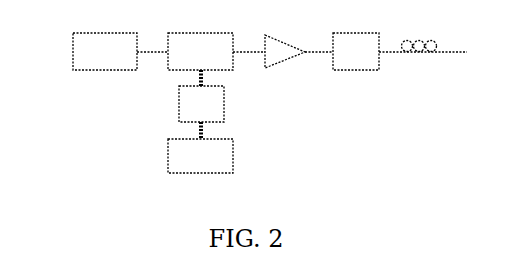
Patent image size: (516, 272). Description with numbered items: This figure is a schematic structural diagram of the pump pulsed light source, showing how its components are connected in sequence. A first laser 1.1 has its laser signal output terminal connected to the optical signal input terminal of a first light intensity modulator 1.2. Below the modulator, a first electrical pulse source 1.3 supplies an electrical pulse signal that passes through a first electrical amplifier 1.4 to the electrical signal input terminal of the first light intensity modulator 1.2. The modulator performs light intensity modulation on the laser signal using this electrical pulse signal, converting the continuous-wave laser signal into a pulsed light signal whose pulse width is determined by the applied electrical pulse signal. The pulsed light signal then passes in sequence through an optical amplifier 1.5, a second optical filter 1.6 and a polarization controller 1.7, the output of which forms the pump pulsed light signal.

The first laser 1.1 is at (75, 35).
The first light intensity modulator 1.2 is at (175, 35).
The first electrical pulse source 1.3 is at (168, 140).
The first electrical amplifier 1.4 is at (180, 86).
The optical amplifier 1.5 is at (267, 36).
The second optical filter 1.6 is at (334, 34).
The polarization controller 1.7 is at (425, 45).